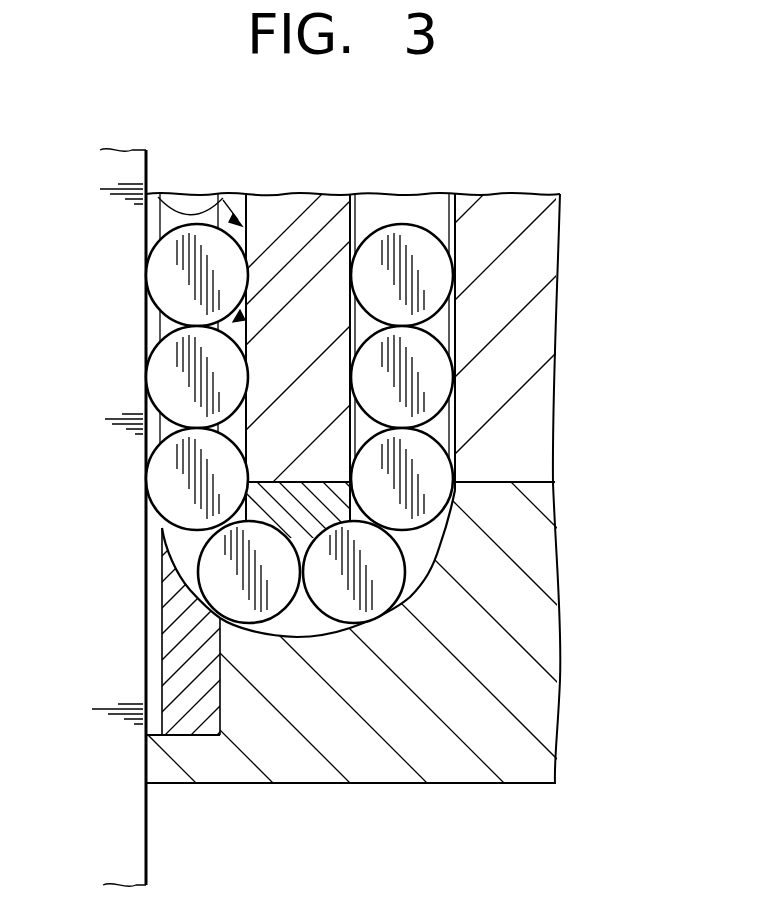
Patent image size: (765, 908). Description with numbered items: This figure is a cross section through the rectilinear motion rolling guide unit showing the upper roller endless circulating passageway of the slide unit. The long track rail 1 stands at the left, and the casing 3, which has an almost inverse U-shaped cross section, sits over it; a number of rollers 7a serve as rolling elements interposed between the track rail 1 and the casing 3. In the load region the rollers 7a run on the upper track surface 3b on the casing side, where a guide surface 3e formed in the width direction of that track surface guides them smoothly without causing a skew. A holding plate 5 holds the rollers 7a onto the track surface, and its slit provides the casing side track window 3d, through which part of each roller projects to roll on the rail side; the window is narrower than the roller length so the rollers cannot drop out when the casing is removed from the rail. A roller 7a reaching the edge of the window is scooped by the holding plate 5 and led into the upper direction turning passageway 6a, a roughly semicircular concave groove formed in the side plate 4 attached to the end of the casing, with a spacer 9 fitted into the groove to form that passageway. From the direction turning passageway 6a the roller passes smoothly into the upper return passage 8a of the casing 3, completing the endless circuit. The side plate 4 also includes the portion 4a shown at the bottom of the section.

The track rail 1 is at (138, 858).
The casing 3 is at (545, 228).
The upper track surface on the casing side 3b is at (225, 194).
The casing side track window 3d is at (162, 527).
The guide surface 3e is at (236, 318).
The side plate 4 is at (527, 716).
The flange of inner member 4a is at (172, 770).
The holding plate 5 is at (200, 717).
The upper direction turning passageway 6a is at (440, 558).
The roller 7a is at (160, 282).
The upper return passage 8a is at (452, 194).
The spacer 9 is at (297, 512).